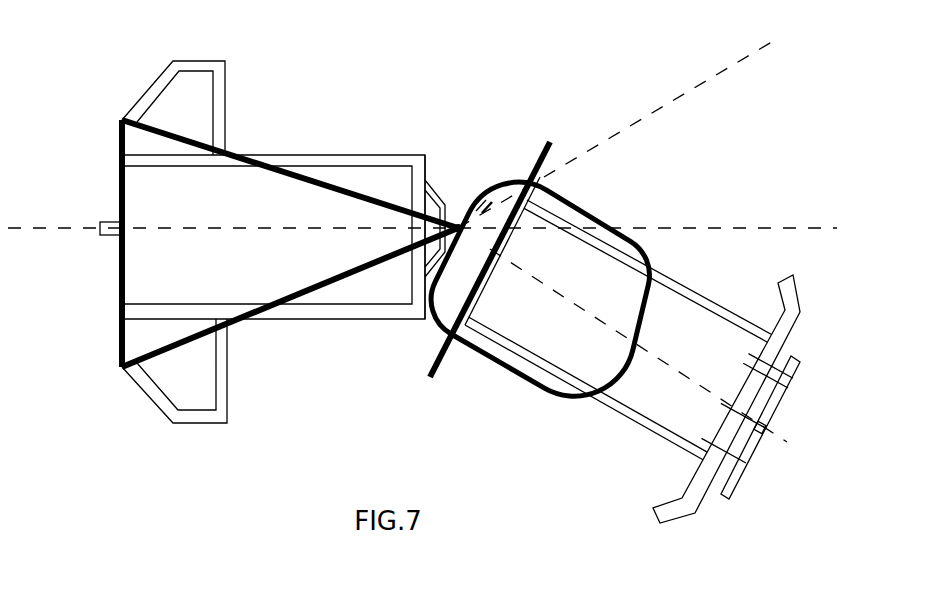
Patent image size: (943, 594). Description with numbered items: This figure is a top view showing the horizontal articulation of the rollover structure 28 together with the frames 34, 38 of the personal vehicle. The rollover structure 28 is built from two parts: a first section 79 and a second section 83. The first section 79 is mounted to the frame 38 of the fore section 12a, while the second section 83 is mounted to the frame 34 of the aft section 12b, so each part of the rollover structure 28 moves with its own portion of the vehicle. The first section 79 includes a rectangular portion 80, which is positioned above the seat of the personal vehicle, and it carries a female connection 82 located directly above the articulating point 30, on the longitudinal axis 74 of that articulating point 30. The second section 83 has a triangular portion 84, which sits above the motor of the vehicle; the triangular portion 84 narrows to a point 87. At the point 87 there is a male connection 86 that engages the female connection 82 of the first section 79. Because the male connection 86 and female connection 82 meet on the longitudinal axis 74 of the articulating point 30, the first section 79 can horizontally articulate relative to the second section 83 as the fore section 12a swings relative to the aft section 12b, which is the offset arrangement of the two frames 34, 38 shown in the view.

The fore section 12a is at (697, 530).
The aft section 12b is at (114, 422).
The rollover structure 28 is at (335, 187).
The articulating point 30 is at (457, 223).
The frame 34 is at (193, 425).
The frame 38 is at (608, 423).
The longitudinal axis 74 is at (420, 298).
The first section 79 is at (598, 217).
The rectangular portion 80 is at (495, 367).
The female connection 82 is at (472, 203).
The second section 83 is at (263, 165).
The triangular portion 84 is at (250, 323).
The male connection 86 is at (450, 213).
The point 87 is at (423, 158).